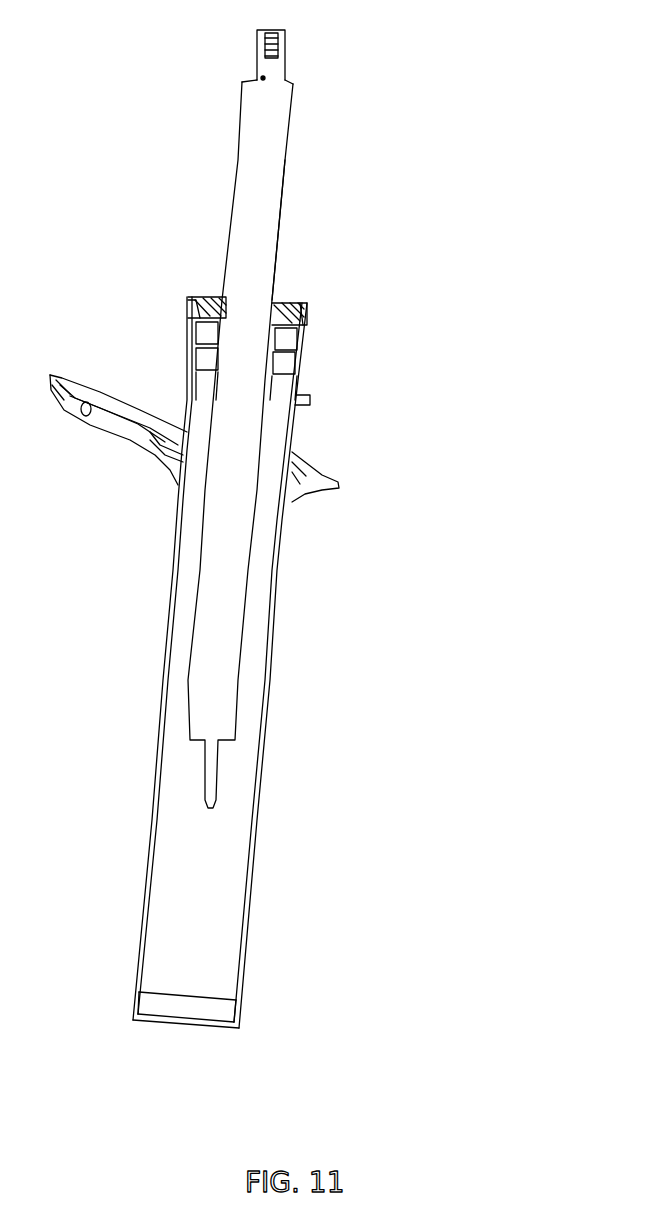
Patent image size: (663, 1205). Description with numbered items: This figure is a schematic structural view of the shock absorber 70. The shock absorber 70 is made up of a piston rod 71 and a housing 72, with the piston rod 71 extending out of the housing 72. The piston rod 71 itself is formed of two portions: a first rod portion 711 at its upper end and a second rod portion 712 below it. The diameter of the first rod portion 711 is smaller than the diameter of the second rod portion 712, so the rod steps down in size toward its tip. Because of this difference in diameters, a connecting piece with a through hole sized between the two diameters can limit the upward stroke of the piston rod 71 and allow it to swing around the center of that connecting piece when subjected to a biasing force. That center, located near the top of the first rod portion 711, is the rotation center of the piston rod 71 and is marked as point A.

The shock absorber 70 is at (415, 110).
The piston rod 71 is at (252, 250).
The first rod portion 711 is at (288, 60).
The second rod portion 712 is at (286, 195).
The housing 72 is at (188, 300).
The rotation center A is at (260, 78).